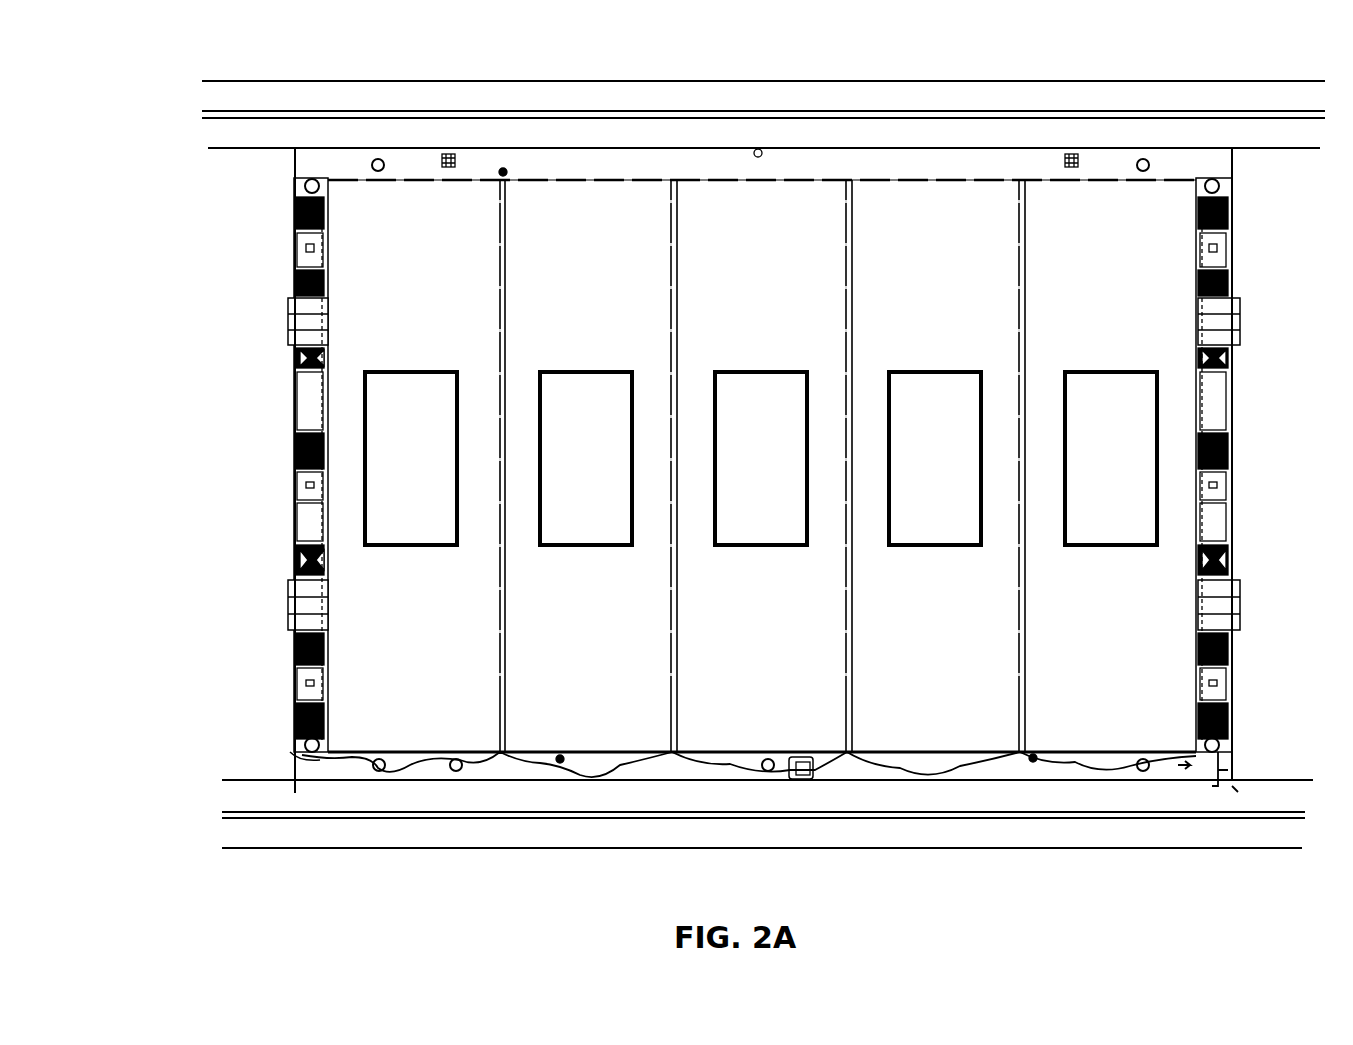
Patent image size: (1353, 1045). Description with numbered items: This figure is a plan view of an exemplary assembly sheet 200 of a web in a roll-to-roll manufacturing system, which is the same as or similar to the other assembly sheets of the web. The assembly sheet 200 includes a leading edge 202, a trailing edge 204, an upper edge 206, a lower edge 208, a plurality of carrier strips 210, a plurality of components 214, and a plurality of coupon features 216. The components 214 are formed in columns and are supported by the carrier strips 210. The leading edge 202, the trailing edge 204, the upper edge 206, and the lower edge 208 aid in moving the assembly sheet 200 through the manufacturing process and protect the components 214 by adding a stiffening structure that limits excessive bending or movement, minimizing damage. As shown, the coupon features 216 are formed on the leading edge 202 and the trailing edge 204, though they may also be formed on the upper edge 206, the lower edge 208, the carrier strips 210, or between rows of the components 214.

The assembly sheet 200 is at (168, 102).
The leading edge 202 is at (1217, 454).
The trailing edge 204 is at (305, 777).
The upper edge 206 is at (266, 470).
The lower edge 208 is at (1248, 771).
The carrier strips 210 is at (672, 204).
The components 214 is at (761, 458).
The coupon features 216 is at (1255, 336).